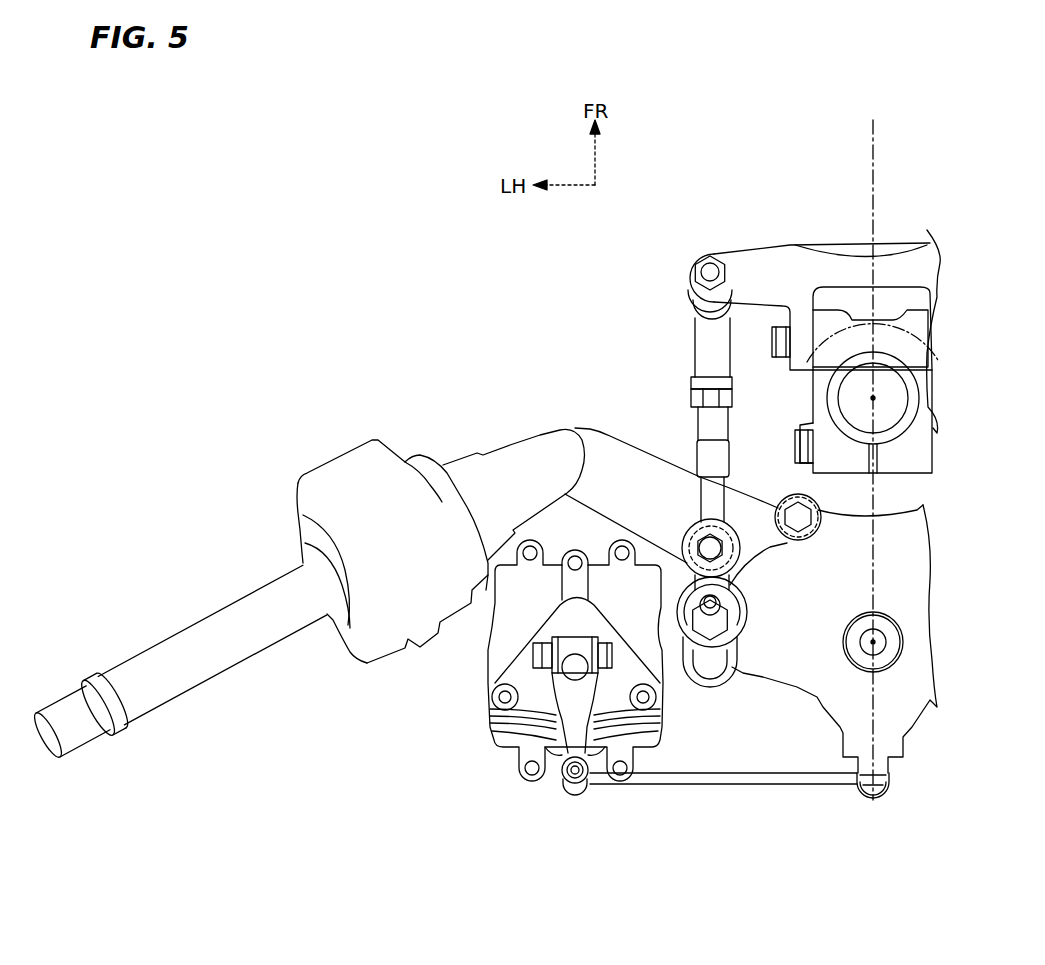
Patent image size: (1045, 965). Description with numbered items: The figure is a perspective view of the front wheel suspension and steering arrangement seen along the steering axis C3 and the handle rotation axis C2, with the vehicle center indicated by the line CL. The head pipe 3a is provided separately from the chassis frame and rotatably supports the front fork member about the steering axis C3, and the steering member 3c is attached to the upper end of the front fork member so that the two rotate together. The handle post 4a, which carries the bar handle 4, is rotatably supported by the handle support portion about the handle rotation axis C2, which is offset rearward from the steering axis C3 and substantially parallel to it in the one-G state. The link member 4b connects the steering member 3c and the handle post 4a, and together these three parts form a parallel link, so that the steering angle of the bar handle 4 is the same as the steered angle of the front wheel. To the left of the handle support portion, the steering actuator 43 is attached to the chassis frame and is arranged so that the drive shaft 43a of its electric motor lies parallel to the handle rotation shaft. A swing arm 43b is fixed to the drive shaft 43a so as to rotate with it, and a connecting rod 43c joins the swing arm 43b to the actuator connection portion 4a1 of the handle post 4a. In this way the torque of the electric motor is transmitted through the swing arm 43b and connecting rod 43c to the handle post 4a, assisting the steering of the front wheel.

The bar handle 4 is at (188, 632).
The handle post 4a is at (830, 563).
The actuator connection portion 4a1 is at (865, 790).
The link member 4b is at (698, 362).
The head pipe 3a is at (800, 397).
The steering member 3c is at (755, 240).
The steering actuator 43 is at (487, 676).
The drive shaft 43a is at (577, 672).
The swing arm 43b is at (570, 752).
The connecting rod 43c is at (737, 790).
The handle rotation axis C2 is at (871, 642).
The steering axis C3 is at (873, 398).
The center line CL is at (871, 137).